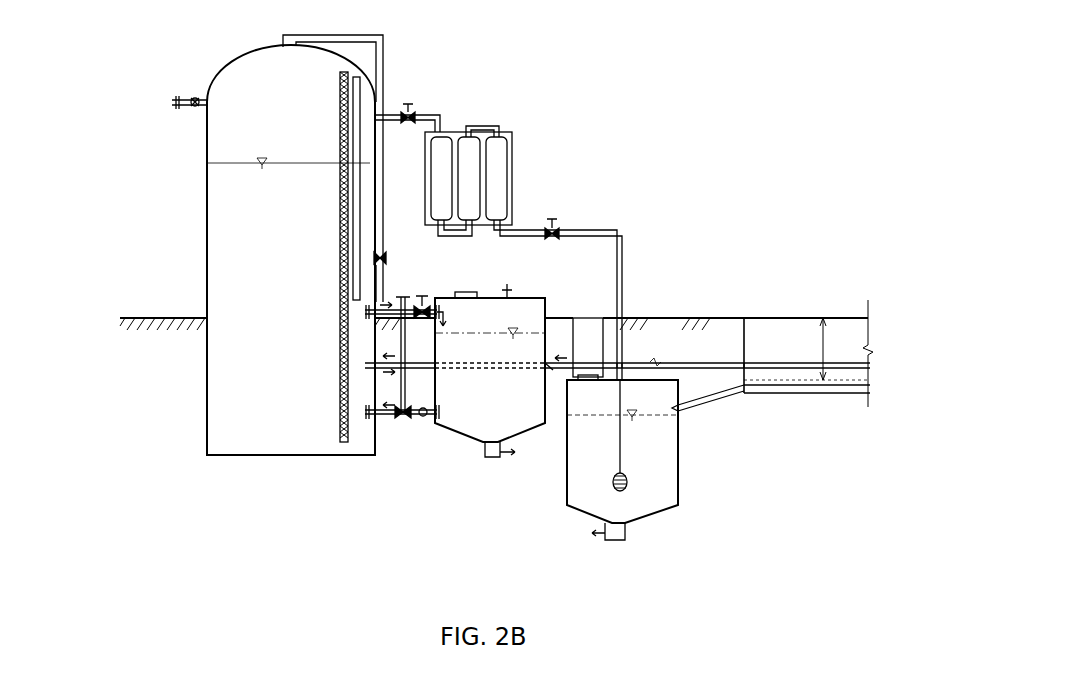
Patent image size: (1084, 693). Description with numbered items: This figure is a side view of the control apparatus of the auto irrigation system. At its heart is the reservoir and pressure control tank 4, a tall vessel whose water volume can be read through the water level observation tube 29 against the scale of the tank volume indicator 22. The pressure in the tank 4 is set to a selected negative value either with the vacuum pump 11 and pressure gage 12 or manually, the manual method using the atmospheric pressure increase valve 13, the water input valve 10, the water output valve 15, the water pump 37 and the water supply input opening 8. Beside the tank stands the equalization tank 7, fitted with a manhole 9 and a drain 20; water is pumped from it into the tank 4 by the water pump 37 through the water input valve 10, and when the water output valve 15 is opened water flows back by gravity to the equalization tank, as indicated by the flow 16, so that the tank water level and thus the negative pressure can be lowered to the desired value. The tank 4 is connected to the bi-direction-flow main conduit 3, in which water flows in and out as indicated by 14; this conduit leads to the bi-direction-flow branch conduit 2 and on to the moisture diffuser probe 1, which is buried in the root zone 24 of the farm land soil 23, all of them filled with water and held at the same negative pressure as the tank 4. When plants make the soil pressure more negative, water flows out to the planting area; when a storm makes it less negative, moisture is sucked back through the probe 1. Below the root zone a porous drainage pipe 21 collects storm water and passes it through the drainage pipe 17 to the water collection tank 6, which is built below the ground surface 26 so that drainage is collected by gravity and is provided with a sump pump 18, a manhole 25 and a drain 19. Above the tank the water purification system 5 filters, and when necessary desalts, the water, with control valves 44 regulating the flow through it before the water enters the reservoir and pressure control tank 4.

The moisture diffuser probe 1 is at (790, 362).
The bi-direction-flow branch conduit 2 is at (698, 362).
The bi-direction-flow main conduit 3 is at (633, 362).
The reservoir and pressure control tank 4 is at (207, 262).
The water purification system 5 is at (452, 132).
The water collection tank 6 is at (680, 480).
The equalization tank 7 is at (545, 390).
The water supply input opening 8 is at (507, 288).
The manhole 9 is at (468, 292).
The water input valve 10 is at (403, 418).
The vacuum pump 11 is at (178, 108).
The pressure gage 12 is at (197, 98).
The atmospheric pressure increase valve 13 is at (381, 256).
The water flow in and out of tank 14 is at (553, 372).
The water output valve 15 is at (423, 296).
The water flow to equalization tank 16 is at (446, 316).
The drainage pipe 17 is at (705, 401).
The sump pump 18 is at (616, 474).
The drain 19 is at (624, 541).
The drain 20 is at (497, 458).
The porous drainage pipe 21 is at (800, 389).
The tank volume indicator 22 is at (340, 275).
The farm land soil 23 is at (760, 335).
The root zone 24 is at (823, 335).
The manhole 25 is at (593, 316).
The ground surface 26 is at (178, 322).
The water level observation tube 29 is at (356, 195).
The water pump 37 is at (423, 417).
The control valves 44 is at (410, 108).